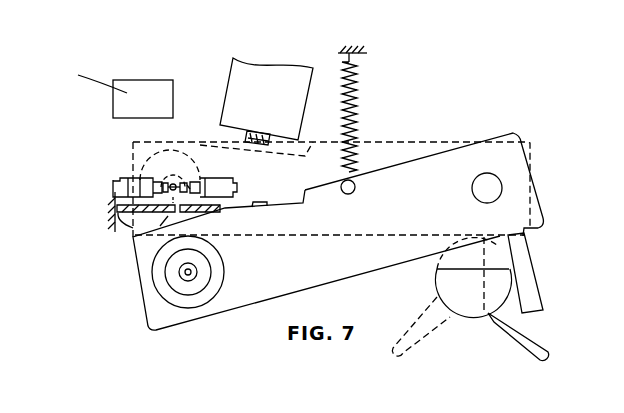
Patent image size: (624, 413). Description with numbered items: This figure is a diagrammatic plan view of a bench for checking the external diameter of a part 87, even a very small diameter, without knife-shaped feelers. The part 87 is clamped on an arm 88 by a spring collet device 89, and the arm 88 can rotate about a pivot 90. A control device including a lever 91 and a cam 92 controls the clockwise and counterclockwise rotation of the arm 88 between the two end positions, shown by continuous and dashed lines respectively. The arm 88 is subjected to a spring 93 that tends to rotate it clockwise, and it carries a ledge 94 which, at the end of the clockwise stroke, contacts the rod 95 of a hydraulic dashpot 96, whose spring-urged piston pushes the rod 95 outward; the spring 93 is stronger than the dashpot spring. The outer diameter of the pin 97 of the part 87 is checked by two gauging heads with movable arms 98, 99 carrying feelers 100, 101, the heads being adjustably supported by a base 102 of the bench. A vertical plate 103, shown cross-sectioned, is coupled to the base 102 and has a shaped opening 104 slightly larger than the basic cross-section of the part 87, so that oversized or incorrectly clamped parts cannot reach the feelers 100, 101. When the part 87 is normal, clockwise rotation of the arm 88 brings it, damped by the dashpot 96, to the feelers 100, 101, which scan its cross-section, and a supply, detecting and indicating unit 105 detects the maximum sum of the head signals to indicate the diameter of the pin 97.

The part 87 is at (183, 272).
The arm 88 is at (215, 306).
The spring collet device 89 is at (170, 295).
The pivot 90 is at (487, 188).
The lever 91 is at (533, 338).
The cam 92 is at (447, 275).
The spring 93 is at (357, 80).
The ledge 94 is at (267, 200).
The rod 95 is at (245, 137).
The hydraulic dashpot 96 is at (230, 85).
The pin 97 is at (173, 282).
The movable arm 98 is at (165, 173).
The movable arm 99 is at (190, 167).
The feeler 100 is at (168, 170).
The feeler 101 is at (181, 168).
The base 102 is at (367, 48).
The vertical plate 103 is at (113, 222).
The shaped opening 104 is at (175, 218).
The supply, detecting and indicating unit 105 is at (173, 90).